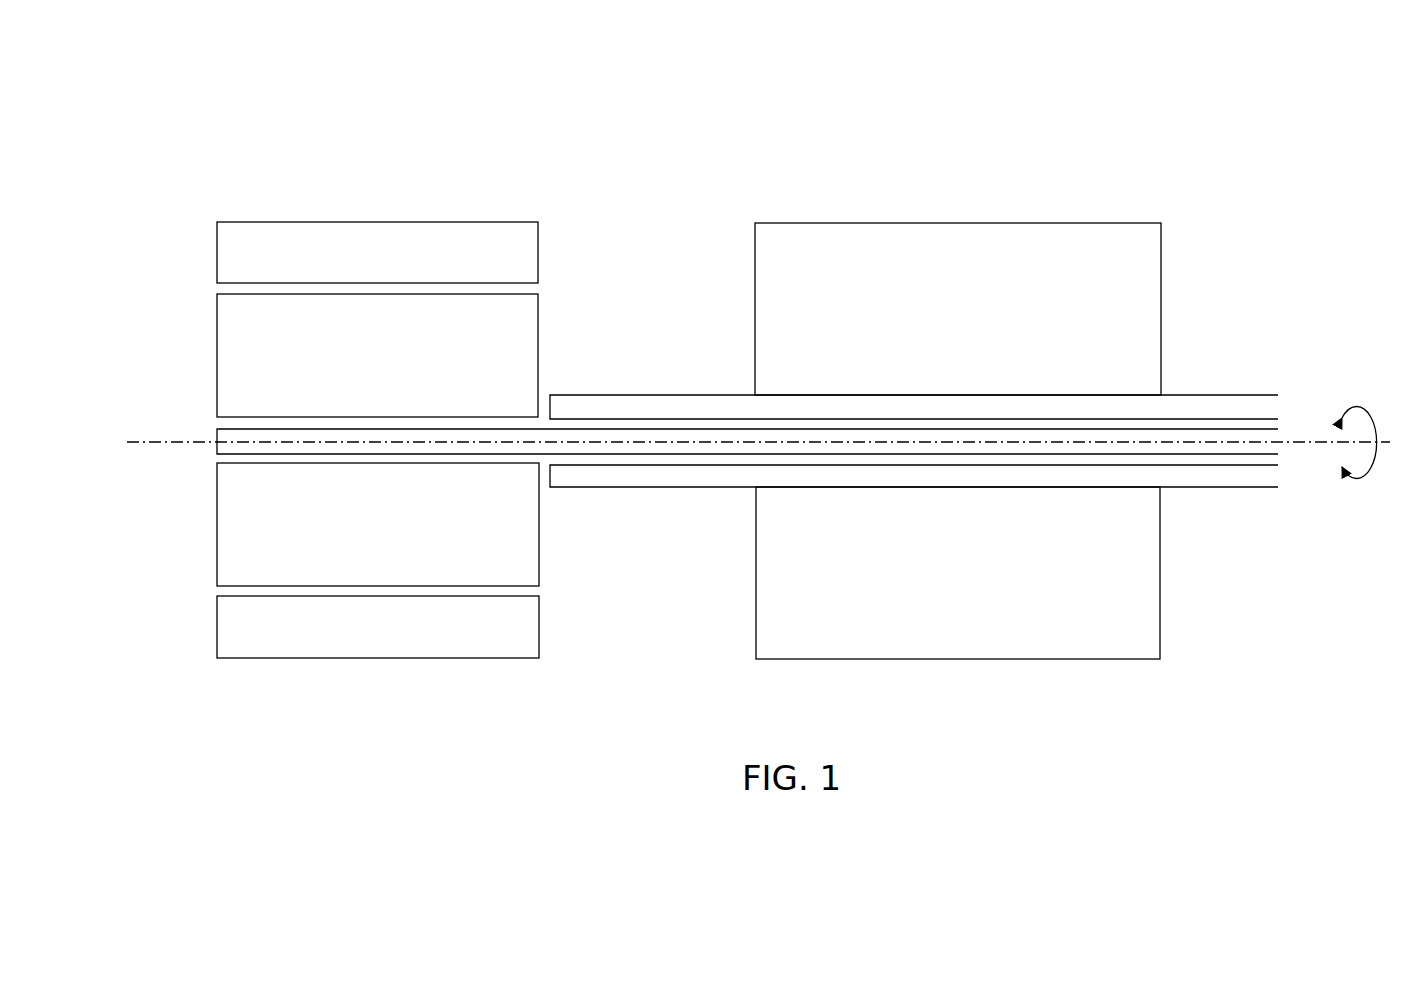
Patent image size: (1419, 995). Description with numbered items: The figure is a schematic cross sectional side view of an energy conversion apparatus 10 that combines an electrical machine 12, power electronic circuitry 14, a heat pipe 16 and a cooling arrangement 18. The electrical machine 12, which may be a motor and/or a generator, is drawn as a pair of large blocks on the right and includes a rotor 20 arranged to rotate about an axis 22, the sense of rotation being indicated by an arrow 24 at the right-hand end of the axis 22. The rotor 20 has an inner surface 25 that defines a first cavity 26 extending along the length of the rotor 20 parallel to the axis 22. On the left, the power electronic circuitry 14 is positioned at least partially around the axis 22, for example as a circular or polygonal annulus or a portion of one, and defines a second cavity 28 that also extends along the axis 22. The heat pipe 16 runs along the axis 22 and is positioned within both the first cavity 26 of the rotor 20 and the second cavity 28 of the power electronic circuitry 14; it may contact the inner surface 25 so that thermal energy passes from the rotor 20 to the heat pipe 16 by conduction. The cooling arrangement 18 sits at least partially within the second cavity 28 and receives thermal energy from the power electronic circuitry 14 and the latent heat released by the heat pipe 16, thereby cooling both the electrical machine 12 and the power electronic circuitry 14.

The energy conversion apparatus 10 is at (1240, 92).
The electrical machine 12 is at (960, 185).
The power electronic circuitry 14 is at (377, 238).
The heat pipe 16 is at (215, 449).
The cooling arrangement 18 is at (522, 330).
The rotor 20 is at (1198, 412).
The axis 22 is at (143, 440).
The arrow 24 is at (1377, 410).
The inner surface 25 is at (667, 418).
The first cavity 26 is at (1290, 461).
The second cavity 28 is at (546, 289).